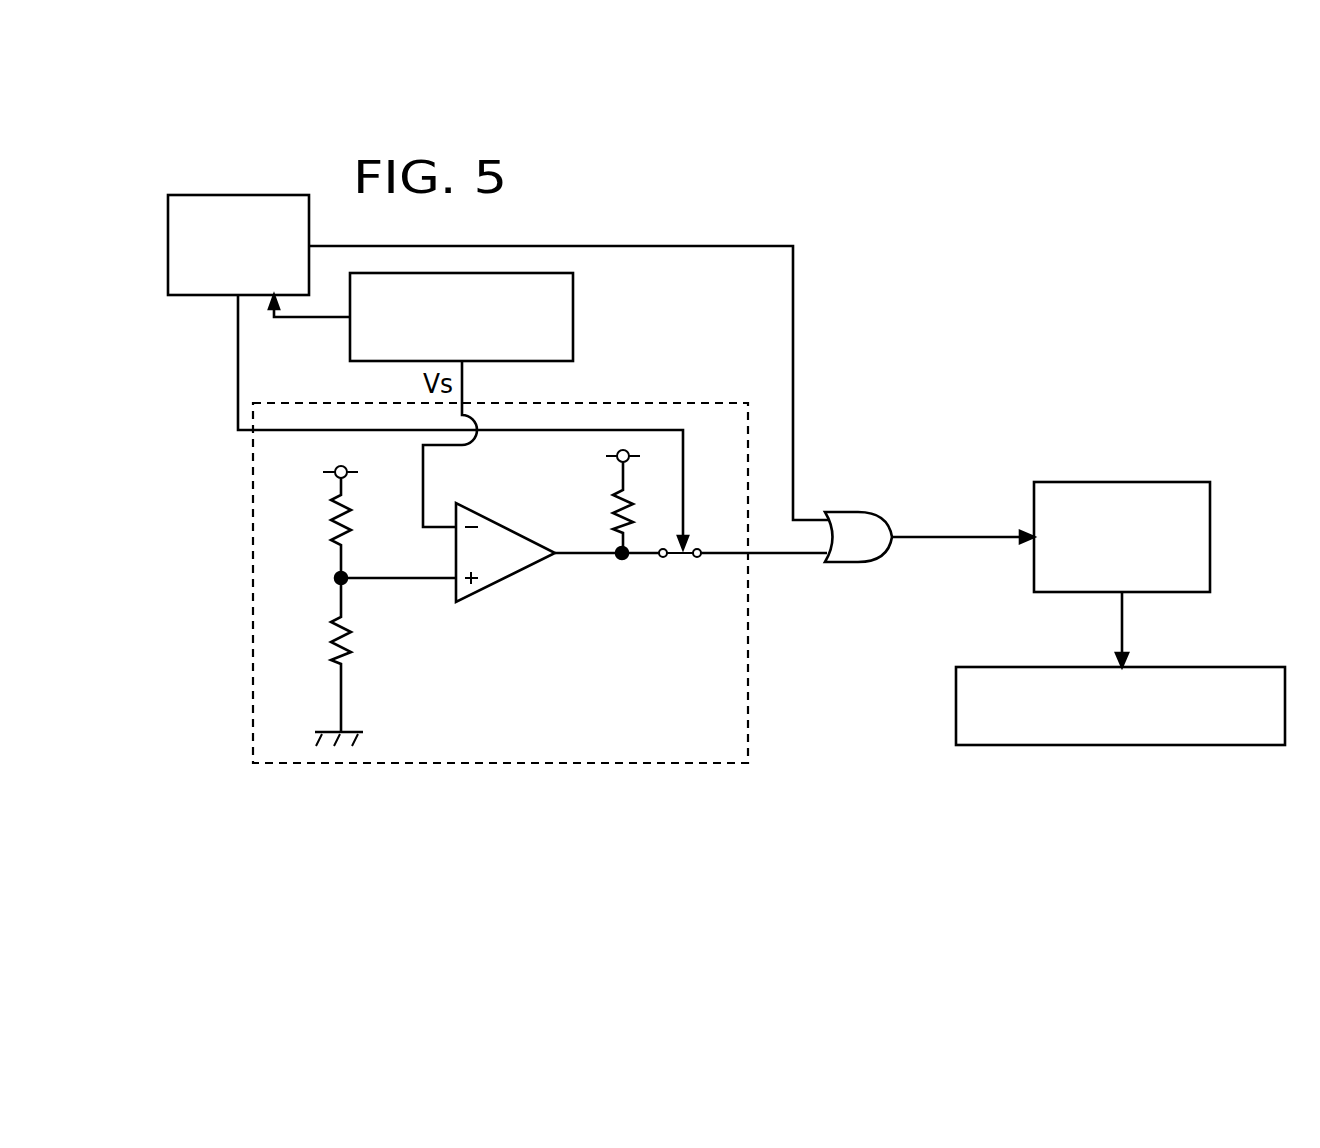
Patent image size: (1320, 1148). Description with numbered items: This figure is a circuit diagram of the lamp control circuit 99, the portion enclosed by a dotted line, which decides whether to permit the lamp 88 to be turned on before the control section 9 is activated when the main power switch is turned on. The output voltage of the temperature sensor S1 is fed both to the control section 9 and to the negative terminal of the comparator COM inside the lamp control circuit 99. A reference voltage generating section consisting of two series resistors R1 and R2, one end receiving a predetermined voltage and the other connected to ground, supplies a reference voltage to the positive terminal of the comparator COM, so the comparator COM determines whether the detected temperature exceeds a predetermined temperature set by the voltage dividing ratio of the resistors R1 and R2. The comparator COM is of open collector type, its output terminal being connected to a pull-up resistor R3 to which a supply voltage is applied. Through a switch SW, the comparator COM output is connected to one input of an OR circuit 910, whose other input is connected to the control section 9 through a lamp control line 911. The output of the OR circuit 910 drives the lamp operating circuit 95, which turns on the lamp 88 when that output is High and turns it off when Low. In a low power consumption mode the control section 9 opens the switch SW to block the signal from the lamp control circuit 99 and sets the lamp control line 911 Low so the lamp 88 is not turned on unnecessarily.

The control section 9 is at (245, 195).
The temperature sensor S1 is at (574, 300).
The lamp control line 911 is at (661, 243).
The lamp control circuit 99 is at (252, 582).
The resistor R1 is at (331, 530).
The resistor R2 is at (331, 645).
The pull-up resistor R3 is at (612, 515).
The comparator COM is at (508, 580).
The switch SW is at (683, 563).
The OR circuit 910 is at (848, 525).
The lamp operating circuit 95 is at (1110, 482).
The lamp 88 is at (956, 712).